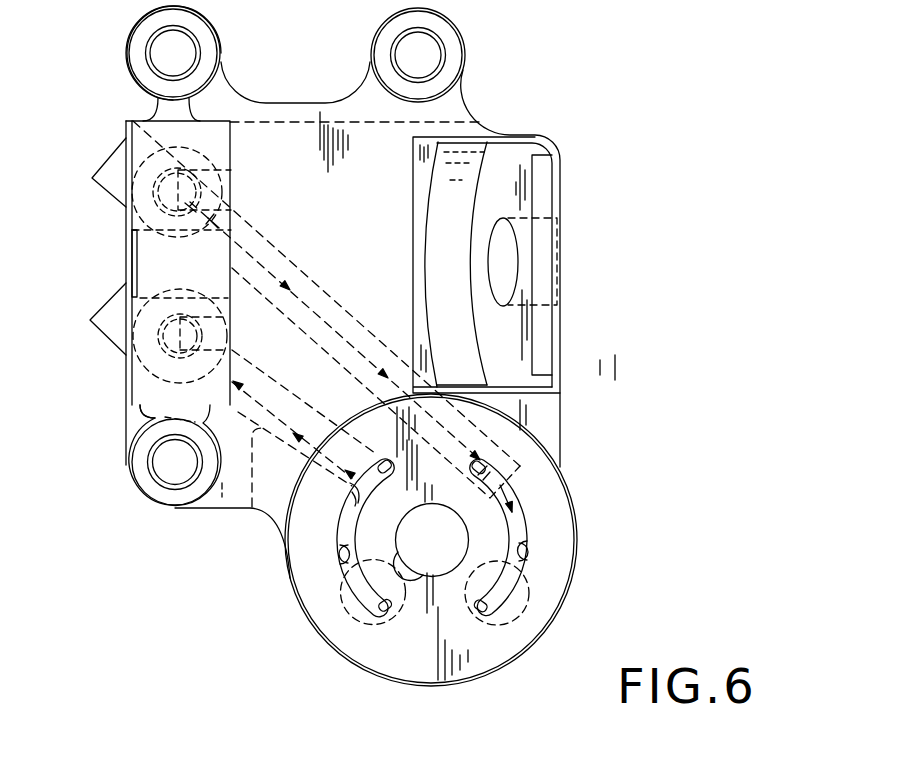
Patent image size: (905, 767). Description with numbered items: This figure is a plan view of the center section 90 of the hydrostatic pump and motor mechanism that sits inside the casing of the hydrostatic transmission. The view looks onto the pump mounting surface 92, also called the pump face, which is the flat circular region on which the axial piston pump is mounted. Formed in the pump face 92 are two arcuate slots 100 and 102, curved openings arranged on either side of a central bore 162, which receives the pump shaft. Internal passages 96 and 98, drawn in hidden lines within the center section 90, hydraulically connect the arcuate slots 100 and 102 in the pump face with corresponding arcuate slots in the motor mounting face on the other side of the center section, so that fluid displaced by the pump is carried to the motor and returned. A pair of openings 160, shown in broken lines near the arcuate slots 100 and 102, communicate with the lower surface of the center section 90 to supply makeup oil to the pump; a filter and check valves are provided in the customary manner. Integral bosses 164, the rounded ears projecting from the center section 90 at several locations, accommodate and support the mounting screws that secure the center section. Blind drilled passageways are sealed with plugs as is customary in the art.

The center section 90 is at (588, 139).
The pump mounting surface 92 is at (543, 490).
The internal passage 96 is at (286, 263).
The internal passage 98 is at (250, 507).
The arcuate slot 100 is at (523, 563).
The arcuate slot 102 is at (343, 572).
The opening 160 is at (372, 622).
The bore 162 is at (423, 575).
The integral boss 164 is at (455, 53).